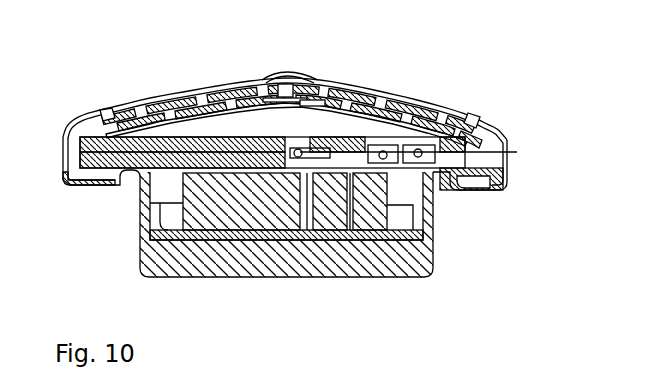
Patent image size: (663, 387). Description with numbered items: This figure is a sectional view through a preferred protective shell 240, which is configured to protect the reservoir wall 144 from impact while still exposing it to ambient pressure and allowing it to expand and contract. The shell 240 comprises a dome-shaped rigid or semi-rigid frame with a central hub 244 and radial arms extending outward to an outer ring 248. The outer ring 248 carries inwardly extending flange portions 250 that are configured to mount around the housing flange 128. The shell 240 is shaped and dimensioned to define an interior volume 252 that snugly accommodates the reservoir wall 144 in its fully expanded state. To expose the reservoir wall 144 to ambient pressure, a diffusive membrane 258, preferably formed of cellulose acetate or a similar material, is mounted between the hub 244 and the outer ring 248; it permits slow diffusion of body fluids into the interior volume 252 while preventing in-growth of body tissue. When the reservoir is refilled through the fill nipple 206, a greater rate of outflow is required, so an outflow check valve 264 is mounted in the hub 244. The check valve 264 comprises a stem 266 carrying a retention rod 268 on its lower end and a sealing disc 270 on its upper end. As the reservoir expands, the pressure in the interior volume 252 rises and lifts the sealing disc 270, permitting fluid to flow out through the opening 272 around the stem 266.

The housing flange 128 is at (503, 178).
The reservoir wall 144 is at (128, 105).
The fill nipple 206 is at (517, 153).
The protective shell 240 is at (428, 82).
The hub 244 is at (347, 90).
The outer ring 248 is at (480, 118).
The flange portions 250 is at (477, 190).
The interior volume 252 is at (178, 107).
The diffusive membrane 258 is at (388, 98).
The outflow check valve 264 is at (240, 80).
The stem 266 is at (279, 88).
The retention rod 268 is at (242, 110).
The sealing disc 270 is at (293, 82).
The opening 272 is at (310, 104).